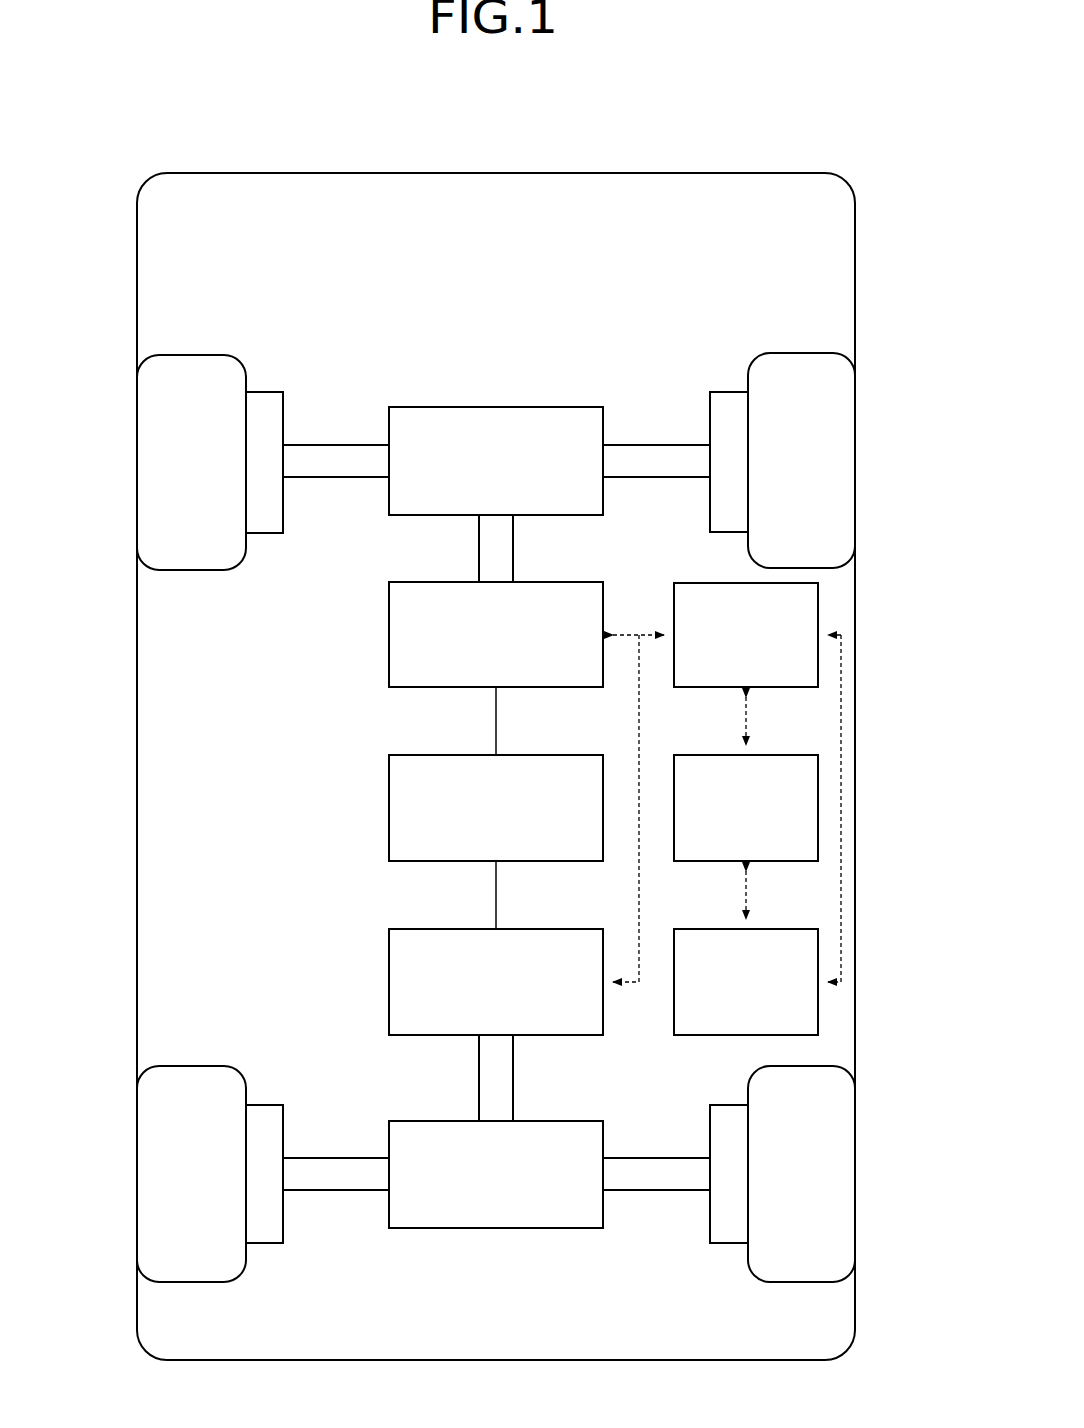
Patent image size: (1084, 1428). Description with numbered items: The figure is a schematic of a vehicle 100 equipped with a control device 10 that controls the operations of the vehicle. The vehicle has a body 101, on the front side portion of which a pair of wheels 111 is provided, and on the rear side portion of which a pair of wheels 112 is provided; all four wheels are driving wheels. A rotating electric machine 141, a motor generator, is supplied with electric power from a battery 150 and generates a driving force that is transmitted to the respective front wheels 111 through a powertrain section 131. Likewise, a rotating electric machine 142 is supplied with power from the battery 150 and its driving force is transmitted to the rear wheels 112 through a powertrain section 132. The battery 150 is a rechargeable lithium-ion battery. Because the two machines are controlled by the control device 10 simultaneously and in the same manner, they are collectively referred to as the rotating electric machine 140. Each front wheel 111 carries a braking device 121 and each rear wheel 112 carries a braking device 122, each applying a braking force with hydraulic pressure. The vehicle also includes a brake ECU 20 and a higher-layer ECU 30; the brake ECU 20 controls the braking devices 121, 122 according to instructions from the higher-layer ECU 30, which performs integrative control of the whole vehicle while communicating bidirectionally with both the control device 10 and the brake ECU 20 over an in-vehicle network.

The vehicle 100 is at (864, 124).
The vehicle body 101 is at (855, 258).
The wheels 111 is at (160, 456).
The wheels 112 is at (160, 1186).
The braking device 121 is at (263, 392).
The braking device 122 is at (262, 1243).
The powertrain section 131 is at (524, 407).
The powertrain section 132 is at (524, 1228).
The rotating electric machine 140 is at (435, 808).
The rotating electric machine 141 is at (435, 634).
The rotating electric machine 142 is at (435, 982).
The battery 150 is at (389, 806).
The control device 10 is at (818, 602).
The brake ECU 20 is at (818, 786).
The higher-layer ECU 30 is at (818, 1015).